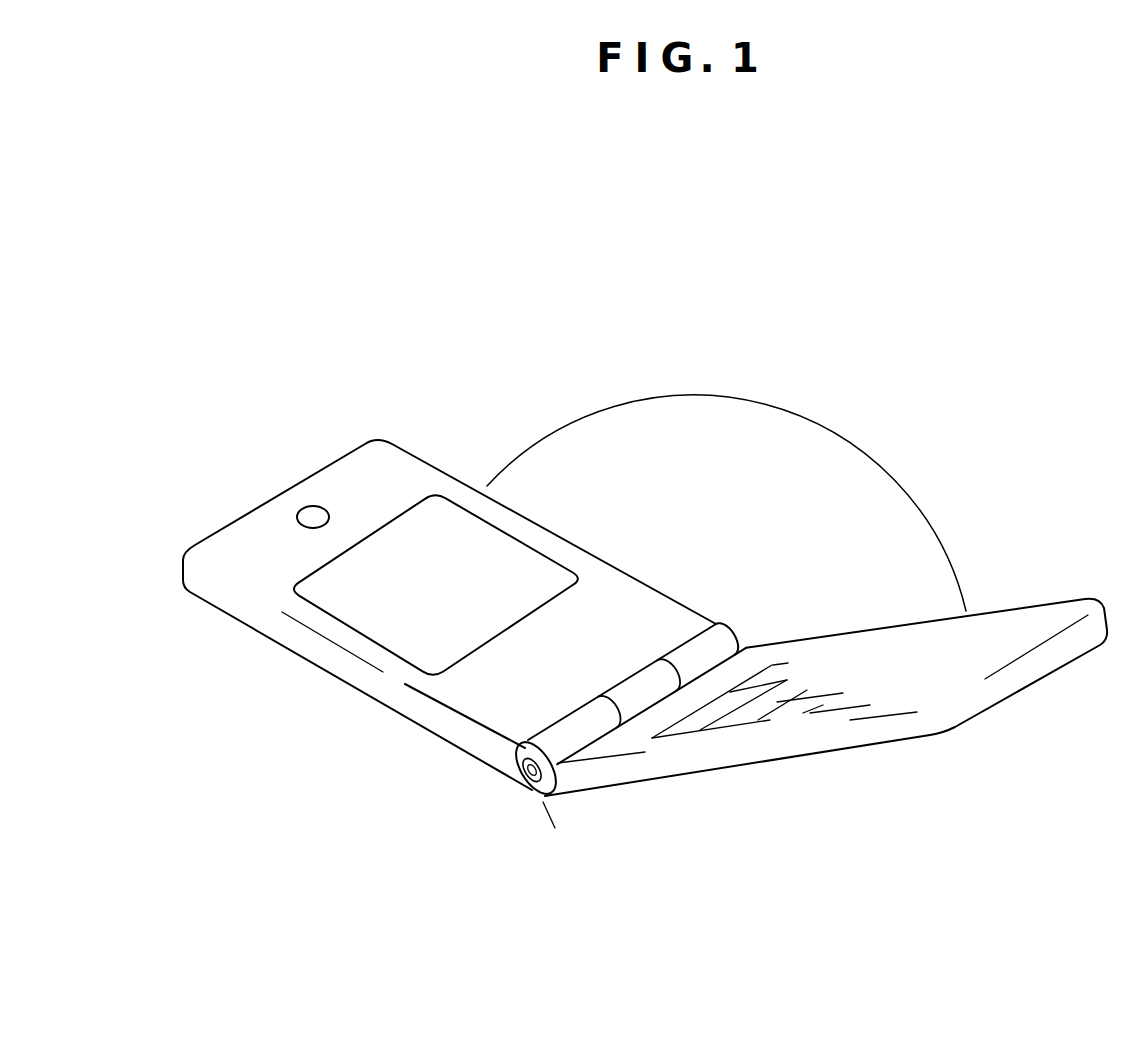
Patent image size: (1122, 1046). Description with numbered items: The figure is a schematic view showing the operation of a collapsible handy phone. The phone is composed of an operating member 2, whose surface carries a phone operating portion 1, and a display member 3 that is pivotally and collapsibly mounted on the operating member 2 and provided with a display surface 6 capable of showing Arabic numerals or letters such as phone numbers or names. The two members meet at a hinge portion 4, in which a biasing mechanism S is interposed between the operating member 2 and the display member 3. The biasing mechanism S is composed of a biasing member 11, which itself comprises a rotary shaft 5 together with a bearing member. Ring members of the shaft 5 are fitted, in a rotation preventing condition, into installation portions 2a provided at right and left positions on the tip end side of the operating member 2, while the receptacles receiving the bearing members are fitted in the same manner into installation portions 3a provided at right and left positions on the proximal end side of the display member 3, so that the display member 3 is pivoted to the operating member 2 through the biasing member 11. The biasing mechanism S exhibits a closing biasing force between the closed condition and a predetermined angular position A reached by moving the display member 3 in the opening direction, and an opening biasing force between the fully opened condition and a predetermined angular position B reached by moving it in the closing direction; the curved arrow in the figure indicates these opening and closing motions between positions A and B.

The phone operating portion 1 is at (748, 718).
The operating member 2 is at (908, 735).
The installation portions 2a is at (747, 647).
The display member 3 is at (350, 685).
The installation portions 3a is at (594, 720).
The hinge portion 4 is at (742, 620).
The rotary shaft 5 is at (523, 784).
The display surface 6 is at (337, 611).
The biasing member 11 is at (555, 863).
The biasing mechanism S is at (519, 765).
The predetermined angular position A is at (943, 545).
The predetermined angular position B is at (541, 444).